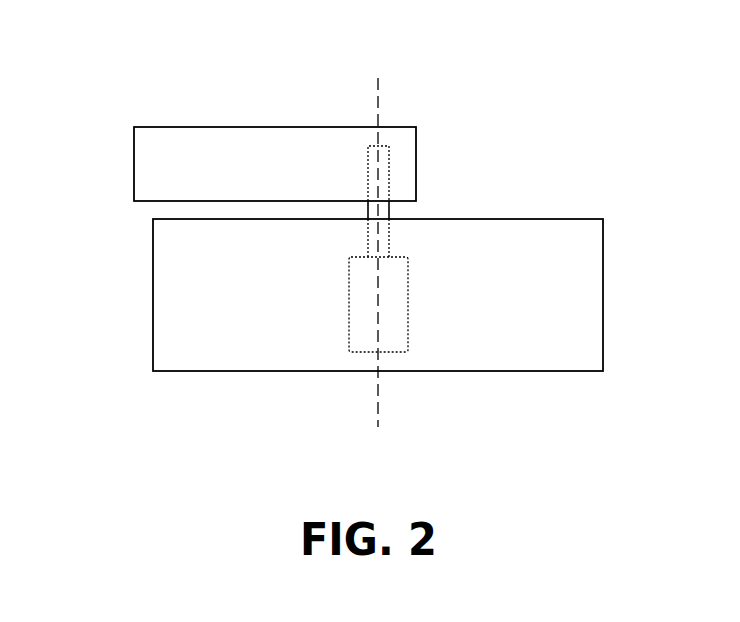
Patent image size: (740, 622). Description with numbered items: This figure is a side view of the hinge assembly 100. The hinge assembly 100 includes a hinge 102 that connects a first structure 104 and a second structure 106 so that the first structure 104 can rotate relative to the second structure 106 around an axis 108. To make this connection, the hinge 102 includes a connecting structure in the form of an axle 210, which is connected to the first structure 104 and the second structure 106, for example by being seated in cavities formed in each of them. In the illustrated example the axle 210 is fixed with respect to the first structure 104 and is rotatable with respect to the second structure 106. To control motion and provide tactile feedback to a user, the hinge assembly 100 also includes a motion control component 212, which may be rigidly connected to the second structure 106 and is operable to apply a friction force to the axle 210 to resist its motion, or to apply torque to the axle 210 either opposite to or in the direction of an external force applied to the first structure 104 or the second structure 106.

The hinge assembly 100 is at (115, 52).
The hinge 102 is at (435, 203).
The first structure 104 is at (153, 127).
The second structure 106 is at (585, 219).
The axis 108 is at (378, 83).
The axle 210 is at (368, 172).
The motion control component 212 is at (349, 306).